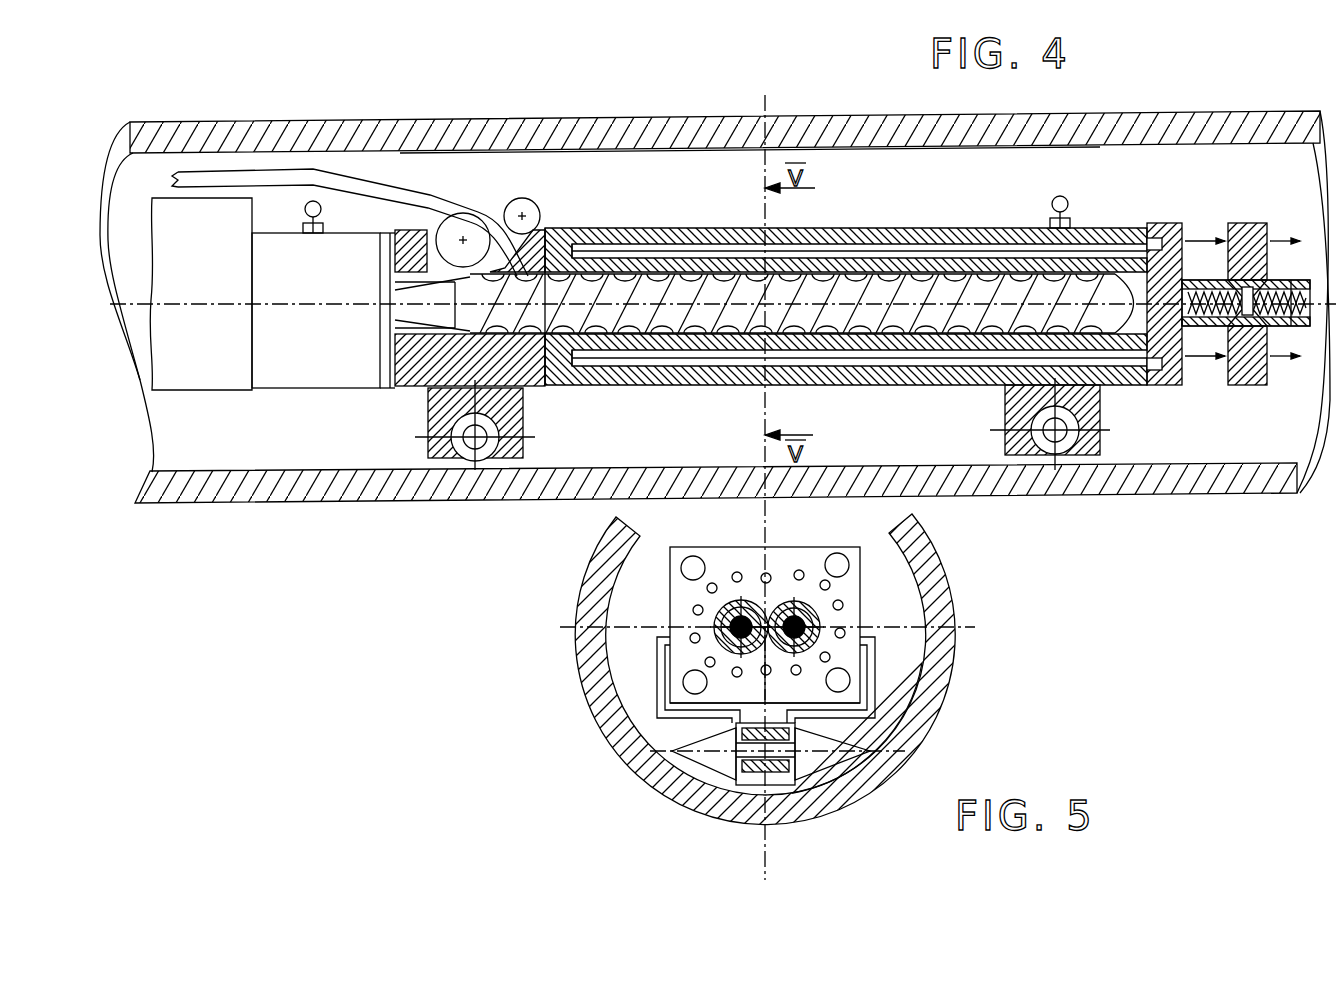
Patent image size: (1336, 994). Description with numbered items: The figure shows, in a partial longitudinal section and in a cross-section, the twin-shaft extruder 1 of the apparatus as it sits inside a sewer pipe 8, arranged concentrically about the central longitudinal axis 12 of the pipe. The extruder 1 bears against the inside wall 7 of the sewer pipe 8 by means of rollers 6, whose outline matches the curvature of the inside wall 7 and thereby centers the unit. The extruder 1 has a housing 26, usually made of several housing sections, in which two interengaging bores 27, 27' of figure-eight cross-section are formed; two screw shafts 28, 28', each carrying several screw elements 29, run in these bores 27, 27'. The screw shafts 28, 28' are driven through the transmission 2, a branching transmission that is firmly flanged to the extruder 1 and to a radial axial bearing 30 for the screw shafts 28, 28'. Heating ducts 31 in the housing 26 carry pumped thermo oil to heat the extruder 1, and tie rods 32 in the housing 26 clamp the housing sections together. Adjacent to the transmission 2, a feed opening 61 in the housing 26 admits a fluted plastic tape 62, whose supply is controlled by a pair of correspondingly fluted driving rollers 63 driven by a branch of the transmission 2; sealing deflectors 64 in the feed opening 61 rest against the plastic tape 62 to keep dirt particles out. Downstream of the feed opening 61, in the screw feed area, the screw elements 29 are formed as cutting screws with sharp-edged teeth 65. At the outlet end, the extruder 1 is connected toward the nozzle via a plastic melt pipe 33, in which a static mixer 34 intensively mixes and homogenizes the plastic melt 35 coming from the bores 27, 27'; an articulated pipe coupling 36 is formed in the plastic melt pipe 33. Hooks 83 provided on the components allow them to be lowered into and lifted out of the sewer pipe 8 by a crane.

In FIG. 4, the twin-shaft extruder 1 is at (874, 226).
In FIG. 4, the transmission 2 is at (200, 370).
In FIG. 5, the transmission 2 is at (625, 708).
In FIG. 4, the rollers 6 is at (480, 452).
In FIG. 5, the rollers 6 is at (812, 746).
In FIG. 4, the inside wall 7 is at (651, 150).
In FIG. 5, the inside wall 7 is at (623, 728).
In FIG. 4, the sewer pipe 8 is at (690, 128).
In FIG. 5, the sewer pipe 8 is at (600, 693).
In FIG. 4, the central longitudinal axis 12 is at (192, 313).
In FIG. 5, the central longitudinal axis 12 is at (760, 620).
In FIG. 4, the housing 26 is at (922, 232).
In FIG. 5, the housing 26 is at (712, 693).
In FIG. 5, the bore 27 is at (628, 643).
In FIG. 5, the bore 27' is at (913, 631).
In FIG. 4, the screw shaft 28 is at (462, 332).
In FIG. 5, the screw shaft 28 is at (729, 581).
In FIG. 5, the screw shaft 28' is at (808, 581).
In FIG. 4, the screw elements 29 is at (970, 290).
In FIG. 4, the radial axial bearing 30 is at (320, 365).
In FIG. 4, the heating ducts 31 is at (915, 352).
In FIG. 5, the heating ducts 31 is at (828, 585).
In FIG. 5, the tie rods 32 is at (840, 682).
In FIG. 4, the plastic melt pipe 33 is at (1207, 300).
In FIG. 4, the static mixer 34 is at (1207, 308).
In FIG. 4, the plastic melt 35 is at (1158, 292).
In FIG. 4, the articulated pipe coupling 36 is at (1250, 222).
In FIG. 4, the feed opening 61 is at (535, 238).
In FIG. 4, the plastic tape 62 is at (425, 195).
In FIG. 4, the driving rollers 63 is at (465, 226).
In FIG. 4, the sealing deflectors 64 is at (435, 292).
In FIG. 4, the sharp-edged teeth 65 is at (435, 310).
In FIG. 4, the hooks 83 is at (1066, 203).